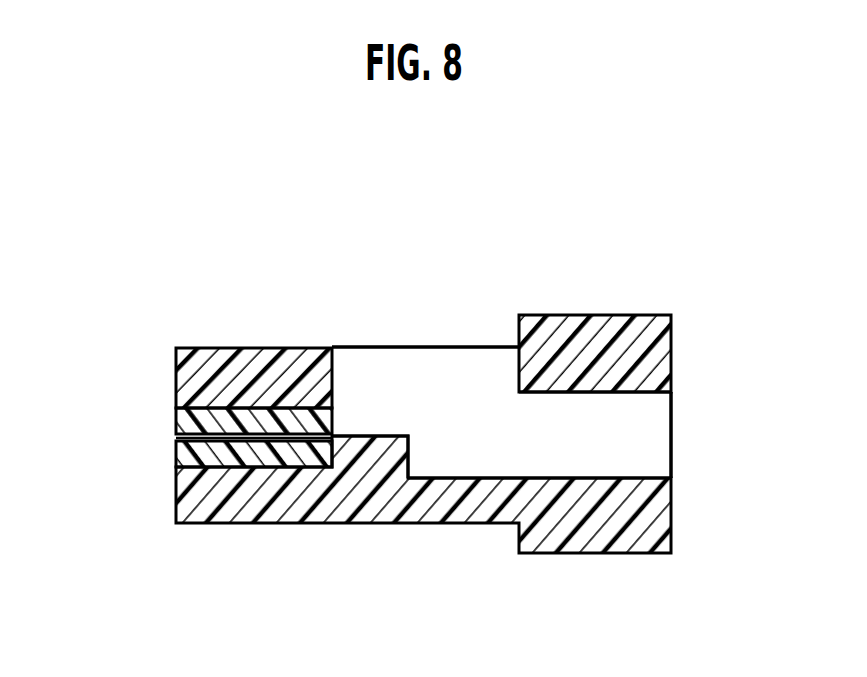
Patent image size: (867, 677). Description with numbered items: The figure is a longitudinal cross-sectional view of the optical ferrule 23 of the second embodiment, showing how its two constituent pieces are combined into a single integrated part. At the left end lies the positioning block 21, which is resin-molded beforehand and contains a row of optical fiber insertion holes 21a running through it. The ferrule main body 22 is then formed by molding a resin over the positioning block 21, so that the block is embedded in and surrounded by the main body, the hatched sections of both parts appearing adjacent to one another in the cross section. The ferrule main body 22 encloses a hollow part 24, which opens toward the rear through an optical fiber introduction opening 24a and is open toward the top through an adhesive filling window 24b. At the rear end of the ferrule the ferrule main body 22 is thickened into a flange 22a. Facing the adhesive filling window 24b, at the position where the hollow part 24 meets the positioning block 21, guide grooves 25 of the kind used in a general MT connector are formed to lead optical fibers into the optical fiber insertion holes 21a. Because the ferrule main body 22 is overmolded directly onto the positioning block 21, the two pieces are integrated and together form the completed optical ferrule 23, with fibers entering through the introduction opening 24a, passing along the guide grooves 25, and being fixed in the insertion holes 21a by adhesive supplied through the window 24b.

The positioning block 21 is at (258, 458).
The optical fiber insertion holes 21a is at (177, 437).
The ferrule main body 22 is at (370, 508).
The flange 22a is at (582, 315).
The optical ferrule 23 is at (390, 595).
The hollow part 24 is at (474, 390).
The optical fiber introduction opening 24a is at (645, 433).
The adhesive filling window 24b is at (410, 362).
The guide grooves 25 is at (357, 436).